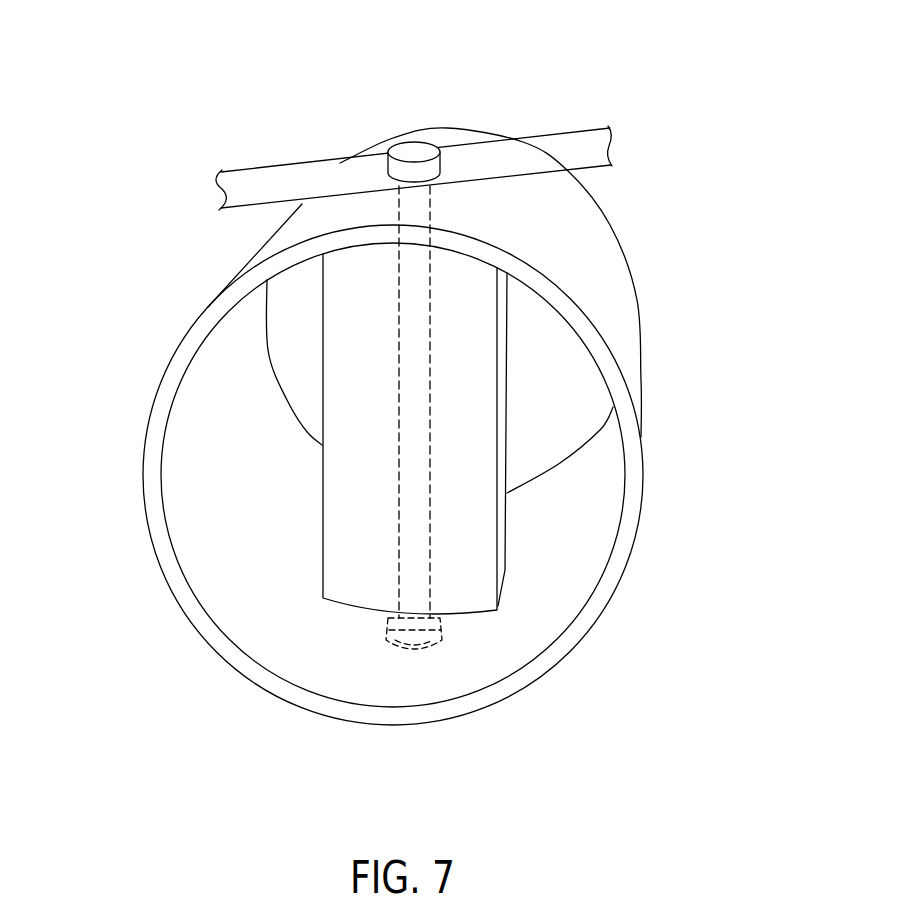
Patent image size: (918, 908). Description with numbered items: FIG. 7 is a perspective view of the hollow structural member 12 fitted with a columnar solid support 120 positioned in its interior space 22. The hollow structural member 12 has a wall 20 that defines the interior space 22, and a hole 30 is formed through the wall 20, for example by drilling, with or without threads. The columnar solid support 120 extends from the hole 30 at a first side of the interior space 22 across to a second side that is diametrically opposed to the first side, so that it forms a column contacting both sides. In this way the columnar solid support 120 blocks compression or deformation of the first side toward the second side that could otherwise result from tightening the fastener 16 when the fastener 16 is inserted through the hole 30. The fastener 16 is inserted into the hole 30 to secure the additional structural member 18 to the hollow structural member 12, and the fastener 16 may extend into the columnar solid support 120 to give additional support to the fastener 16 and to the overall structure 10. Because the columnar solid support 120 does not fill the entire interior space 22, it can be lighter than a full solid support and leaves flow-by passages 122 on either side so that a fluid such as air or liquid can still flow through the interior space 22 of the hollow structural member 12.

The structure 10 is at (648, 49).
The hollow structural member 12 is at (655, 163).
The fastener 16 is at (400, 150).
The additional structural member 18 is at (572, 148).
The wall 20 is at (613, 276).
The interior space 22 is at (525, 650).
The hole 30 is at (430, 183).
The columnar solid support 120 is at (470, 420).
The flow-by passages 122 is at (245, 433).